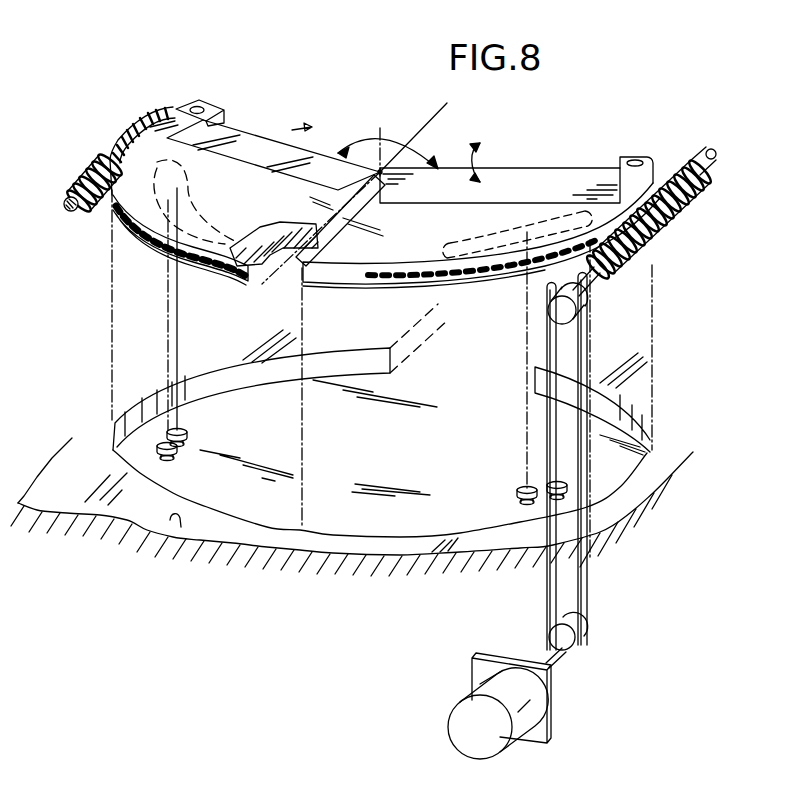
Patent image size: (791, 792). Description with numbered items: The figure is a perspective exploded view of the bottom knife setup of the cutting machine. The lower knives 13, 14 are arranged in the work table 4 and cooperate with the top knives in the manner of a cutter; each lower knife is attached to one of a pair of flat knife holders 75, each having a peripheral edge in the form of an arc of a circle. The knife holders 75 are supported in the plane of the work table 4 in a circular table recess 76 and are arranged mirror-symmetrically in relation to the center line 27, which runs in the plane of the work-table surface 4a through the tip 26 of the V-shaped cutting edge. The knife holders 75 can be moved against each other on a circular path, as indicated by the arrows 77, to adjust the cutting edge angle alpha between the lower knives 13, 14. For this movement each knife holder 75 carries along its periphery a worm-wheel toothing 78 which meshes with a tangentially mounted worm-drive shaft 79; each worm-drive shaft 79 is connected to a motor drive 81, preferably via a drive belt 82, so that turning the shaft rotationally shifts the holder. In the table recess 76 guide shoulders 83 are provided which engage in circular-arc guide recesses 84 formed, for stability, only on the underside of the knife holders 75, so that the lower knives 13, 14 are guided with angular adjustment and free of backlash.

The work table 4 is at (130, 527).
The work-table surface 4a is at (170, 520).
The bottom knife 13 is at (257, 142).
The bottom knife 14 is at (566, 178).
The tip of the V-shaped cutting edge 26 is at (380, 171).
The center line 27 is at (420, 126).
The knife holder 75 is at (297, 243).
The circular table recess 76 is at (383, 449).
The arrows 77 is at (292, 130).
The worm-wheel toothing 78 is at (140, 227).
The worm-drive shaft 79 is at (110, 150).
The motor drive 81 is at (458, 712).
The drive belt 82 is at (583, 600).
The guide shoulder 83 is at (176, 447).
The guide recess 84 is at (192, 257).